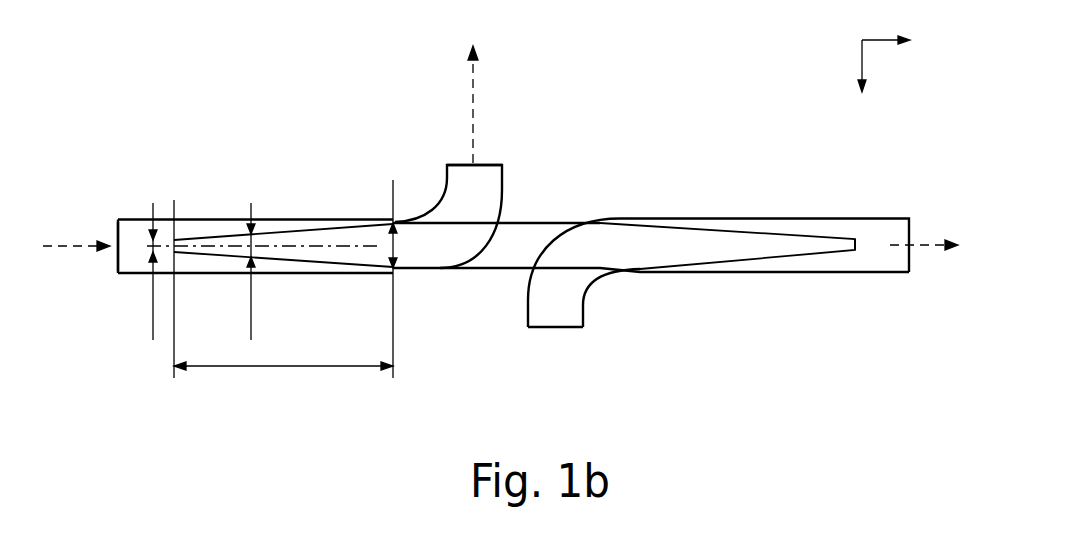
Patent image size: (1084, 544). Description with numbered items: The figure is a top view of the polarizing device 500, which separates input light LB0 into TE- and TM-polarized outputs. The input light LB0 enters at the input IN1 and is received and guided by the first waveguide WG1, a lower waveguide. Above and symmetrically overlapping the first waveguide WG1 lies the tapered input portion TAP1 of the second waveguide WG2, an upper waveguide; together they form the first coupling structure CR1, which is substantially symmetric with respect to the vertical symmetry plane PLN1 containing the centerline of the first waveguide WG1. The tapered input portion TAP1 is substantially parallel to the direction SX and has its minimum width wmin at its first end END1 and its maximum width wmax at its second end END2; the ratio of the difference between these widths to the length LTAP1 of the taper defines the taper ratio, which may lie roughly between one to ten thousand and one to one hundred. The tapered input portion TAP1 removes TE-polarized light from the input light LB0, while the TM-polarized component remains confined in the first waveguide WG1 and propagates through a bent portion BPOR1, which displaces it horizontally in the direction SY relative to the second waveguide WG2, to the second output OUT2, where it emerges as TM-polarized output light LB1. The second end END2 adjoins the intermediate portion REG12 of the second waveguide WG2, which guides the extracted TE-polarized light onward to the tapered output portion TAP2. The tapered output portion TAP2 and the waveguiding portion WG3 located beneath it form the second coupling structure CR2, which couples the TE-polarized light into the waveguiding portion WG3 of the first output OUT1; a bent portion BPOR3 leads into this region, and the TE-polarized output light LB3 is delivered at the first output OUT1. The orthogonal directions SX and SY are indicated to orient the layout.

The polarizing device 500 is at (182, 55).
The input port IN1 is at (133, 219).
The input light LB0 is at (55, 245).
The first end of tapered portion END1 is at (174, 205).
The plane of symmetry PLN1 is at (234, 244).
The tapered input portion TAP1 is at (388, 185).
The first coupling structure CR1 is at (283, 226).
The first waveguide WG1 is at (345, 264).
The minimum width wmin is at (129, 271).
The length of tapered portion LTAP1 is at (283, 351).
The second end of tapered portion END2 is at (393, 190).
The maximum width wmax is at (423, 245).
The second waveguide WG2 is at (540, 223).
The bent portion BPOR1 is at (503, 180).
The second output OUT2 is at (460, 163).
The TM-polarized output light LB1 is at (476, 95).
The intermediate portion REG12 is at (527, 296).
The third bent portion BPOR3 is at (590, 307).
The waveguiding portion WG3 is at (798, 219).
The tapered output portion TAP2 is at (855, 280).
The coupling structure CR2 is at (727, 298).
The first output portion OUT1 is at (853, 219).
The TE-polarized output light LB3 is at (918, 248).
The direction SX is at (908, 43).
The direction SY is at (860, 81).